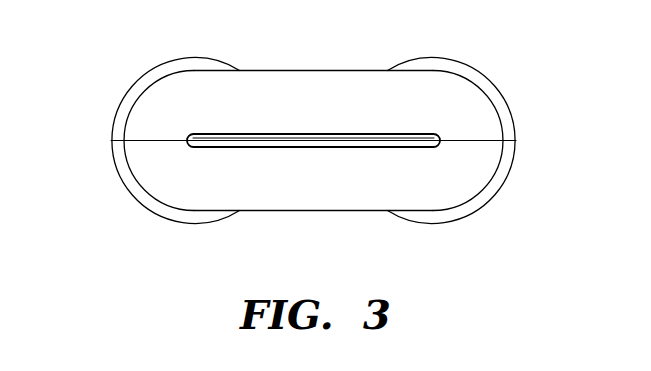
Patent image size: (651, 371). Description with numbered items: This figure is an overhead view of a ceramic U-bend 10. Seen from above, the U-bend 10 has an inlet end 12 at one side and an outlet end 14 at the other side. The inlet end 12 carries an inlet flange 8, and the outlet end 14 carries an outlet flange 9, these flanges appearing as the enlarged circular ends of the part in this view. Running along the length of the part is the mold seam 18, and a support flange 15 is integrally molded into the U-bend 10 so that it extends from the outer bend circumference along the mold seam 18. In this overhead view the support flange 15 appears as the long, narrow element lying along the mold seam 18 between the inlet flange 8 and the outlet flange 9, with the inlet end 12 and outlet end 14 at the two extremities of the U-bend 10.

The U-bend 10 is at (510, 61).
The inlet end 12 is at (129, 203).
The outlet end 14 is at (501, 201).
The inlet flange 8 is at (119, 164).
The outlet flange 9 is at (508, 163).
The support flange 15 is at (313, 143).
The mold seam 18 is at (157, 140).